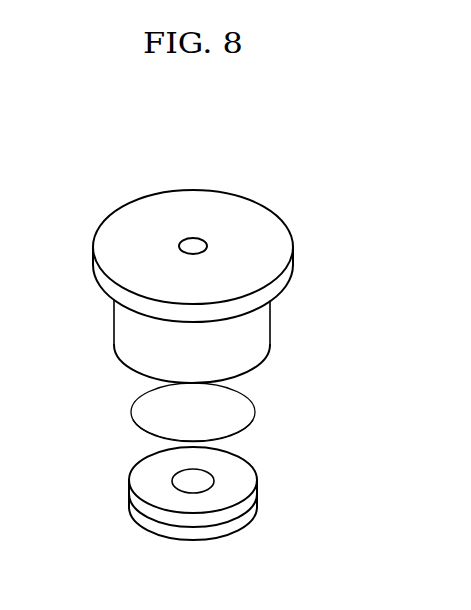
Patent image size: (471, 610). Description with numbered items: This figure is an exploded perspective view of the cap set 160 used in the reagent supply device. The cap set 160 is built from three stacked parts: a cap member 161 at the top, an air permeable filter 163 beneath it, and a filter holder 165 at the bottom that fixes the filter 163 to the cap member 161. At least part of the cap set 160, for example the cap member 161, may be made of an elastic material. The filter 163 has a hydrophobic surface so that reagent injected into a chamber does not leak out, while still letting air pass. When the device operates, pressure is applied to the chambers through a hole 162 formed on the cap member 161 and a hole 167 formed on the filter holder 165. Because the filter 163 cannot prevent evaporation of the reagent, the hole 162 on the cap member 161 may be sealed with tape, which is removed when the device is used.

The cap set 160 is at (318, 184).
The cap member 161 is at (108, 250).
The hole 162 is at (190, 247).
The air permeable filter 163 is at (138, 412).
The filter holder 165 is at (142, 480).
The hole 167 is at (194, 482).